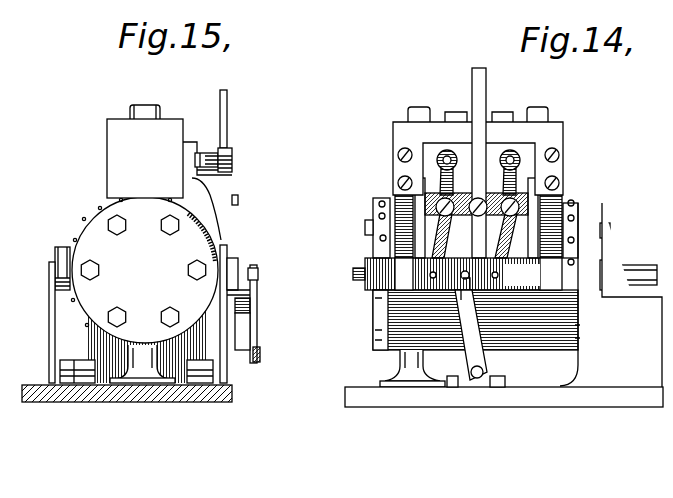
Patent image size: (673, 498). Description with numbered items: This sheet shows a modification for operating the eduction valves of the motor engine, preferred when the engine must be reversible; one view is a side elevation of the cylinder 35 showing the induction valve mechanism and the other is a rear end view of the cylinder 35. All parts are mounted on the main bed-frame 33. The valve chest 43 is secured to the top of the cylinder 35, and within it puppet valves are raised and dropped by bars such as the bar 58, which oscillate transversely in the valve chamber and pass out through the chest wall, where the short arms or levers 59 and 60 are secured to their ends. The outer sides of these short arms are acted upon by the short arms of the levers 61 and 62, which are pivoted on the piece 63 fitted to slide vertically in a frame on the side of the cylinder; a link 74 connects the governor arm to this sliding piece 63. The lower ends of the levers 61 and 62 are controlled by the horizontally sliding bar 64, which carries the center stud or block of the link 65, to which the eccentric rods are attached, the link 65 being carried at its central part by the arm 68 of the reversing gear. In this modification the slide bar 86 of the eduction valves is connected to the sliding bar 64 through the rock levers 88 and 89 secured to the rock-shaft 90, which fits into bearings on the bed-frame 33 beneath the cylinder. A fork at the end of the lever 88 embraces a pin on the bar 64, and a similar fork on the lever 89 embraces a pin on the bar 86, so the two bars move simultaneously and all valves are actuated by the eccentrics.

In FIG. 15, the main bed-frame 33 is at (190, 394).
In FIG. 14, the main bed-frame 33 is at (504, 305).
In FIG. 15, the high pressure cylinder 35 is at (144, 270).
In FIG. 14, the high pressure cylinder 35 is at (375, 342).
In FIG. 15, the valve chest 43 is at (172, 172).
In FIG. 14, the valve chest 43 is at (412, 137).
In FIG. 15, the bar 58 is at (212, 156).
In FIG. 14, the short arm or lever 59 is at (500, 166).
In FIG. 15, the short arm or lever 60 is at (232, 158).
In FIG. 14, the short arm or lever 60 is at (450, 166).
In FIG. 14, the lever 61 is at (515, 228).
In FIG. 14, the lever 62 is at (454, 228).
In FIG. 14, the sliding piece 63 is at (478, 217).
In FIG. 15, the horizontally sliding bar 64 is at (238, 265).
In FIG. 14, the horizontally sliding bar 64 is at (463, 274).
In FIG. 15, the link 65 is at (251, 298).
In FIG. 15, the arm 68 is at (260, 358).
In FIG. 15, the link 74 is at (228, 112).
In FIG. 14, the link 74 is at (482, 112).
In FIG. 15, the slide bar 86 is at (58, 262).
In FIG. 14, the slide bar 86 is at (358, 266).
In FIG. 15, the rock lever 88 is at (226, 362).
In FIG. 14, the rock lever 88 is at (485, 345).
In FIG. 15, the rock lever 89 is at (52, 312).
In FIG. 15, the rock-shaft 90 is at (115, 374).
In FIG. 14, the rock-shaft 90 is at (475, 380).